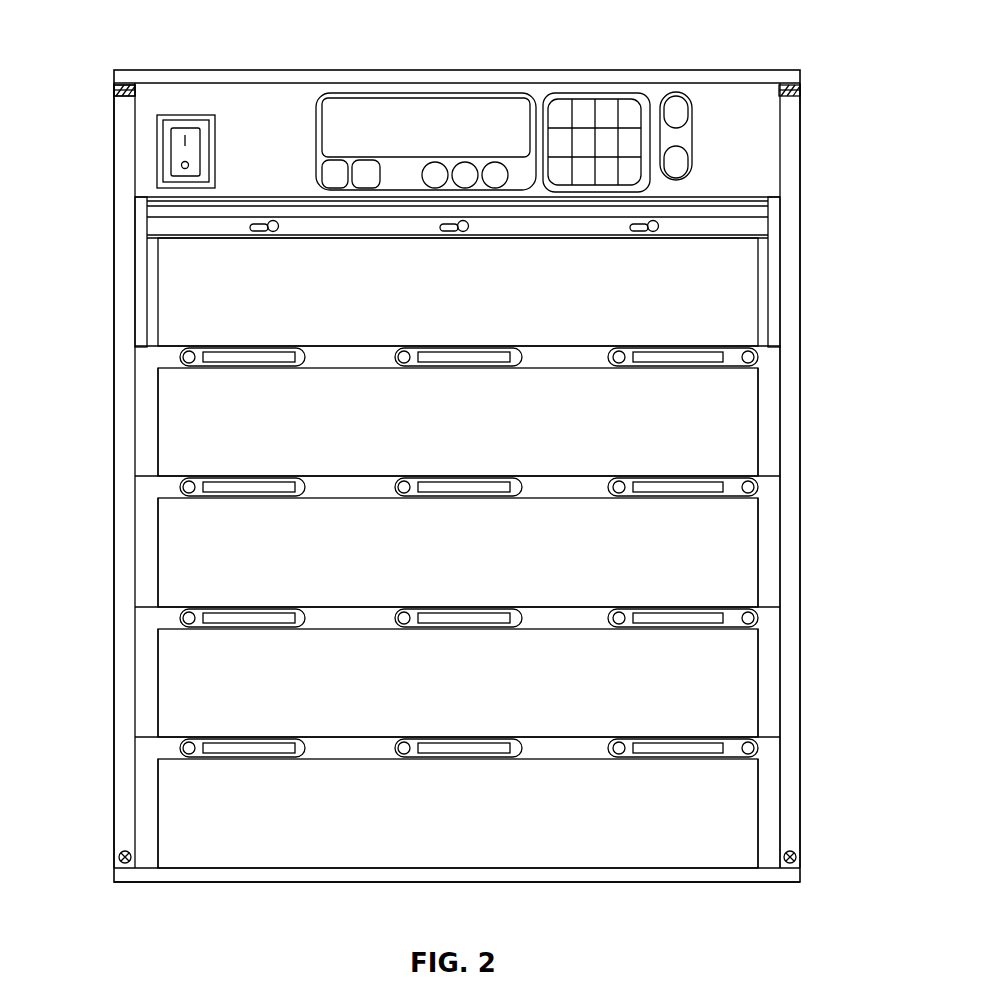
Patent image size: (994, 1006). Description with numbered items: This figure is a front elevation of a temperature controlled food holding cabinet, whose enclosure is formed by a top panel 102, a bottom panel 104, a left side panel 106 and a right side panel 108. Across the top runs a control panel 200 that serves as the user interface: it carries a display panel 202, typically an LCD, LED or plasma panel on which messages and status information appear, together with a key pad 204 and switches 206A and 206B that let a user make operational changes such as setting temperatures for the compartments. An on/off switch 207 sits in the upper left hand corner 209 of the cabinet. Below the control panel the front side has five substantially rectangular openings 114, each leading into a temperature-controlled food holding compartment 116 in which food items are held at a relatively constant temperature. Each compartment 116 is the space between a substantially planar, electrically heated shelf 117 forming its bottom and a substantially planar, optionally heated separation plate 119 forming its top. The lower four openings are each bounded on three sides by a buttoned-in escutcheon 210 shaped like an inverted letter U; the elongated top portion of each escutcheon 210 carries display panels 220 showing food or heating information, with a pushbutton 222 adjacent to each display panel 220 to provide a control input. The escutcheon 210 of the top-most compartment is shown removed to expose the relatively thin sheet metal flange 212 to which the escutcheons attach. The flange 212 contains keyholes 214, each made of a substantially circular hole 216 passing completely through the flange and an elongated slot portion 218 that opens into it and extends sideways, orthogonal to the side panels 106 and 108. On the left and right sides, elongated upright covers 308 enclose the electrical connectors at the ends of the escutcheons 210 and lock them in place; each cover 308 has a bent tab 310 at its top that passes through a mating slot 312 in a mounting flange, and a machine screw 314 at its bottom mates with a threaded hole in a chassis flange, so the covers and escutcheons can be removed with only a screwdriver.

The top panel 102 is at (180, 66).
The bottom panel 104 is at (640, 885).
The left side panel 106 is at (110, 216).
The right side panel 108 is at (806, 178).
The opening 114 is at (172, 283).
The temperature-controlled food holding compartment 116 is at (441, 325).
The electrically heated shelf 117 is at (748, 340).
The separation plate 119 is at (775, 235).
The control panel 200 is at (318, 135).
The display panel 202 is at (420, 112).
The key pad 204 is at (612, 108).
The switch 206A is at (680, 120).
The switch 206B is at (680, 165).
The on/off switch 207 is at (215, 150).
The upper left hand corner 209 is at (114, 93).
The escutcheon 210 is at (770, 377).
The sheet metal flange 212 is at (334, 228).
The keyhole 214 is at (270, 250).
The circular hole 216 is at (278, 232).
The slot portion 218 is at (150, 408).
The display panel 220 is at (250, 357).
The pushbutton 222 is at (622, 350).
The cover 308 is at (118, 410).
The tab 310 is at (130, 96).
The slot 312 is at (125, 88).
The machine screw 314 is at (120, 865).